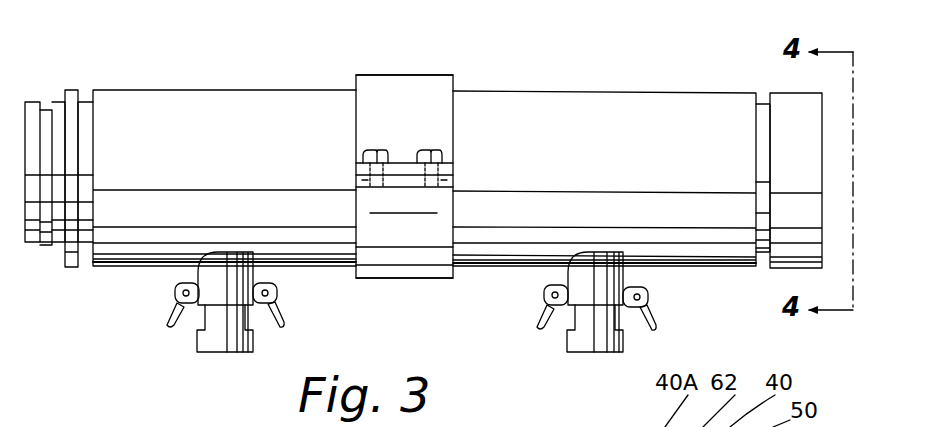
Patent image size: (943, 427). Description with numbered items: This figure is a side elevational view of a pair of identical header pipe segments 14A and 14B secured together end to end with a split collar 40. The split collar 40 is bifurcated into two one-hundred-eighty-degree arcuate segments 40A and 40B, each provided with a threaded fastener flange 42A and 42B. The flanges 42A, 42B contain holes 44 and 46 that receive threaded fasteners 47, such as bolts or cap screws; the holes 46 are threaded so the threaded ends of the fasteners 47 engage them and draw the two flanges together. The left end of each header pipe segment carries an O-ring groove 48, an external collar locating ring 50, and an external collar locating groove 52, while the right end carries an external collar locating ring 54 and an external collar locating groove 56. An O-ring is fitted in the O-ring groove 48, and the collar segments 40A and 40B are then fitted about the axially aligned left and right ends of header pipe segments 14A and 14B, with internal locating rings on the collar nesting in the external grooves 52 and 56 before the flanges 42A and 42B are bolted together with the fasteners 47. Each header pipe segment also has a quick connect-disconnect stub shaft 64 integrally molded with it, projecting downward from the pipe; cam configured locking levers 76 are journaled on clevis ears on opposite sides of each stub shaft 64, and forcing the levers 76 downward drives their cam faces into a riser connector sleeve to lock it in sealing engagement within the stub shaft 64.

The header pipe segment 14A is at (259, 85).
The header pipe segment 14B is at (529, 86).
The split collar 40 is at (422, 178).
The arcuate collar segment 40A is at (378, 73).
The arcuate collar segment 40B is at (415, 282).
The threaded fastener flange 42A is at (447, 163).
The threaded fastener flange 42B is at (444, 192).
The hole 44 is at (368, 167).
The threaded hole 46 is at (362, 183).
The threaded fastener 47 is at (373, 152).
The O-ring groove 48 is at (43, 108).
The external collar locating ring 50 is at (72, 88).
The external collar locating groove 52 is at (86, 101).
The external collar locating ring 54 is at (776, 92).
The external collar locating groove 56 is at (765, 103).
The quick connect-disconnect stub shaft 64 is at (197, 276).
The cam configured locking lever 76 is at (167, 322).